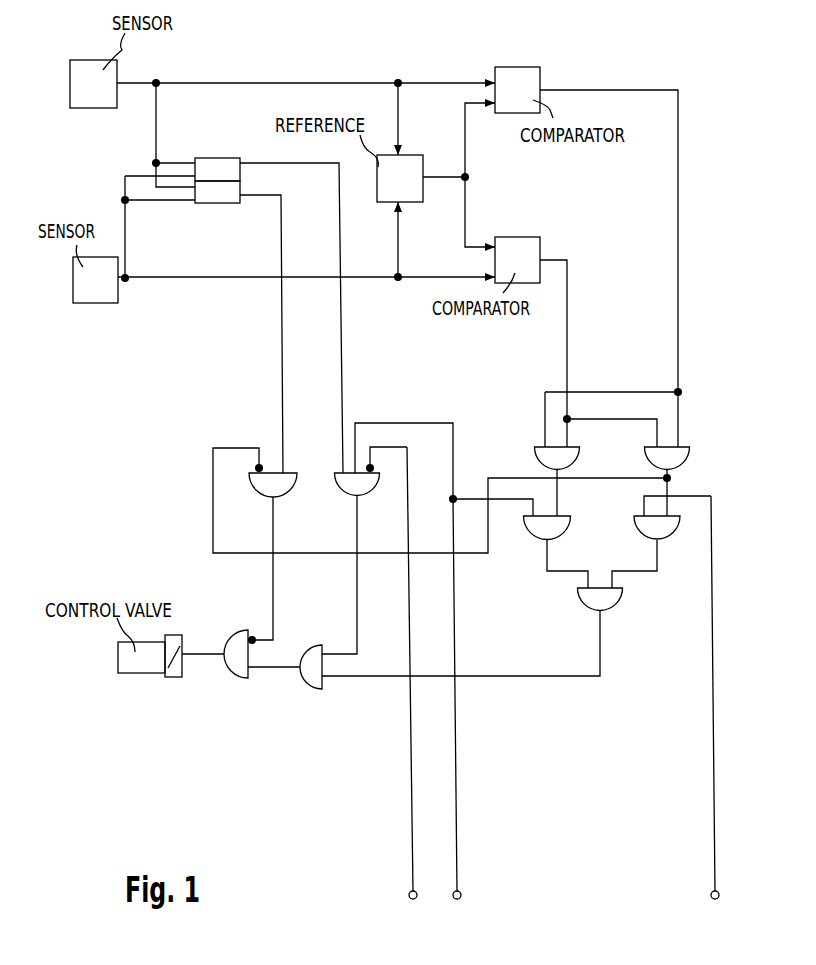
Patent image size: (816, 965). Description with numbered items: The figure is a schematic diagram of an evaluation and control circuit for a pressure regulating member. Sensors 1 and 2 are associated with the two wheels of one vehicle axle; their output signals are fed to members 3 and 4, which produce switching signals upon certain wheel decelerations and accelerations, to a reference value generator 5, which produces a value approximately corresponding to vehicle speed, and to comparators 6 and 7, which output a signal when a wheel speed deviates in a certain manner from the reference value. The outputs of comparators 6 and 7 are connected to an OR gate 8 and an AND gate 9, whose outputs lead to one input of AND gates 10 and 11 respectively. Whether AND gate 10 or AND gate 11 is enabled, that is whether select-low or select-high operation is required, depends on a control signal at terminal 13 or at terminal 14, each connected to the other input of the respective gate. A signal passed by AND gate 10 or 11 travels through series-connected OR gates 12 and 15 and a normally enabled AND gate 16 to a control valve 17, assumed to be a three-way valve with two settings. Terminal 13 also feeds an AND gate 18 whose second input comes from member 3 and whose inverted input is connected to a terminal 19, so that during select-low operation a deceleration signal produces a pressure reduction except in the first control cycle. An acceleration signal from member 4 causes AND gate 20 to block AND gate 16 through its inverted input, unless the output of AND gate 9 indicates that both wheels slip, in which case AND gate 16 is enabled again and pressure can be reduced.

The sensor 1 is at (92, 82).
The sensor 2 is at (100, 288).
The member 3 is at (212, 163).
The member 4 is at (217, 198).
The reference value generator 5 is at (414, 183).
The comparator 6 is at (528, 77).
The comparator 7 is at (520, 247).
The OR gate 8 is at (543, 452).
The AND gate 9 is at (680, 453).
The AND gate 10 is at (550, 527).
The AND gate 11 is at (662, 527).
The OR gate 12 is at (602, 605).
The terminal 13 is at (458, 712).
The terminal 14 is at (715, 711).
The OR gate 15 is at (318, 685).
The AND gate 16 is at (240, 668).
The control valve 17 is at (173, 668).
The AND gate 18 is at (365, 485).
The terminal 19 is at (413, 686).
The AND gate 20 is at (285, 480).